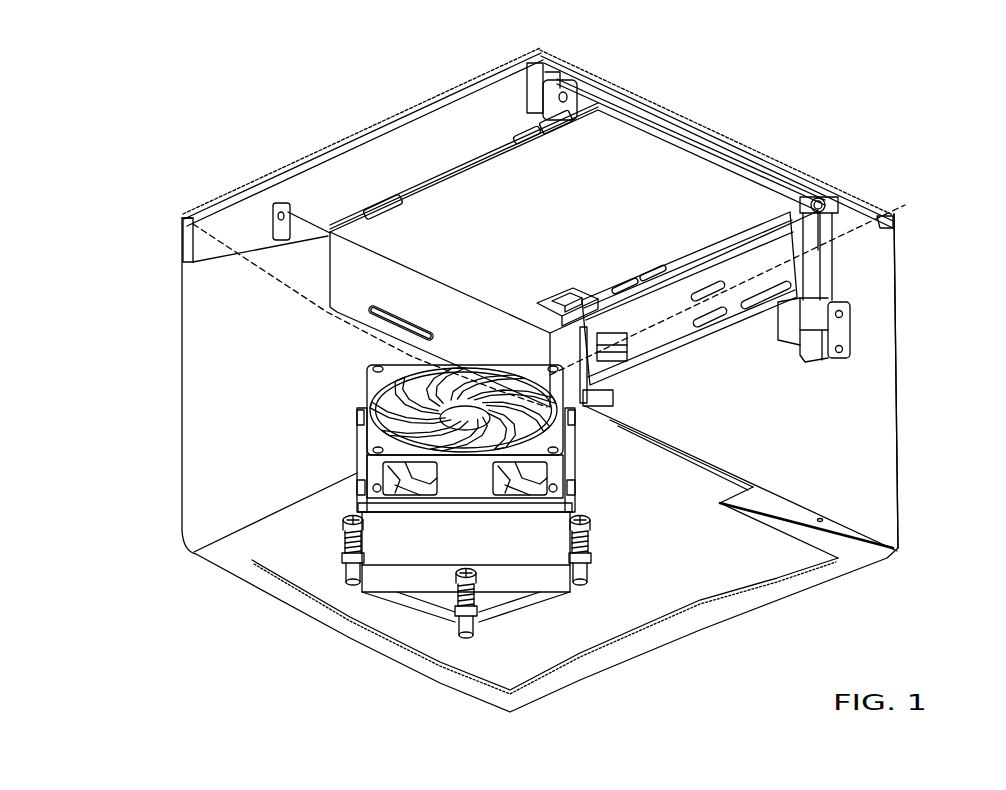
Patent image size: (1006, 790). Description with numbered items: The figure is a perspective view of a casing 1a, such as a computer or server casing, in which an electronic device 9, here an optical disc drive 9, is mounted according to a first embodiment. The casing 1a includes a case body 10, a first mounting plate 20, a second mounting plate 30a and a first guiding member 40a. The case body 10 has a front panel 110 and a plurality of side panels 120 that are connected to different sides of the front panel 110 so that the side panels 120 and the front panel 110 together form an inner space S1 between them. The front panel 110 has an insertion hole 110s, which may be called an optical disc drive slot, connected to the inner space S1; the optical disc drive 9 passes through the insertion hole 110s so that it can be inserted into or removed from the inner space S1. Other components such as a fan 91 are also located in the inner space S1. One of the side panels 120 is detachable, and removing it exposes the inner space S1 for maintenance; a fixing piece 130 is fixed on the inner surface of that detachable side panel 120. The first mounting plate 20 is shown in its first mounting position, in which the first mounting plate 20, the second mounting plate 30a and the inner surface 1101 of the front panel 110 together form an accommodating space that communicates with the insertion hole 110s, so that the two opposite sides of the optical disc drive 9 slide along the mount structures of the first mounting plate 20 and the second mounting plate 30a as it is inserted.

The casing 1a is at (238, 128).
The case body 10 is at (172, 391).
The front panel 110 is at (895, 261).
The inner surface of the front panel 1101 is at (872, 296).
The insertion hole 110s is at (641, 128).
The side panels 120 is at (182, 293).
The fixing piece 130 is at (563, 292).
The electronic device 9 is at (690, 185).
The first mounting plate 20 is at (712, 349).
The second mounting plate 30a is at (383, 196).
The first guiding member 40a is at (806, 367).
The fan 91 is at (572, 469).
The inner space S1 is at (834, 462).